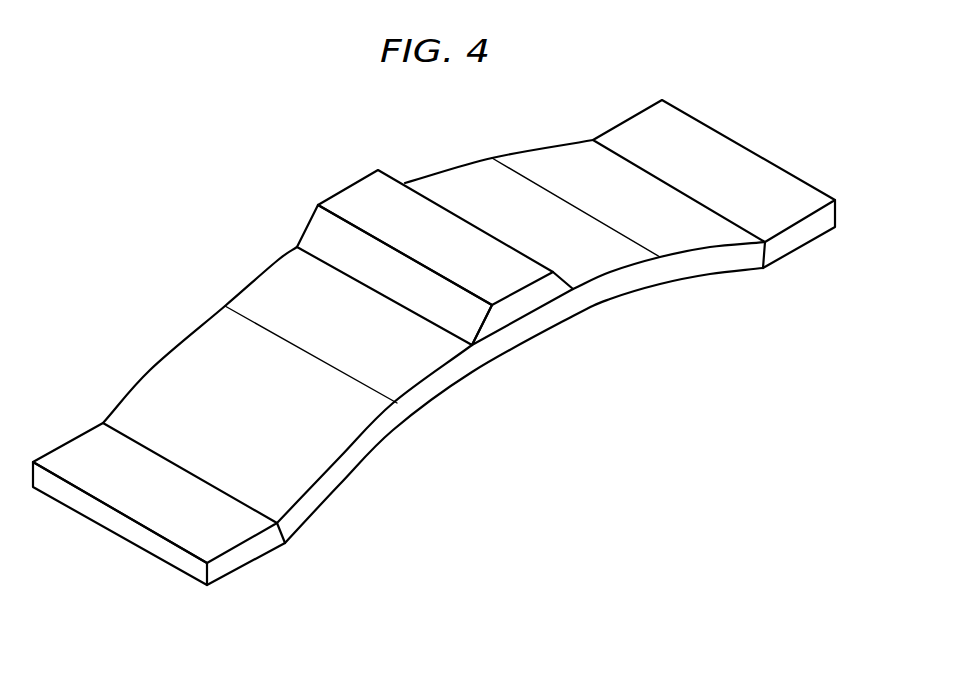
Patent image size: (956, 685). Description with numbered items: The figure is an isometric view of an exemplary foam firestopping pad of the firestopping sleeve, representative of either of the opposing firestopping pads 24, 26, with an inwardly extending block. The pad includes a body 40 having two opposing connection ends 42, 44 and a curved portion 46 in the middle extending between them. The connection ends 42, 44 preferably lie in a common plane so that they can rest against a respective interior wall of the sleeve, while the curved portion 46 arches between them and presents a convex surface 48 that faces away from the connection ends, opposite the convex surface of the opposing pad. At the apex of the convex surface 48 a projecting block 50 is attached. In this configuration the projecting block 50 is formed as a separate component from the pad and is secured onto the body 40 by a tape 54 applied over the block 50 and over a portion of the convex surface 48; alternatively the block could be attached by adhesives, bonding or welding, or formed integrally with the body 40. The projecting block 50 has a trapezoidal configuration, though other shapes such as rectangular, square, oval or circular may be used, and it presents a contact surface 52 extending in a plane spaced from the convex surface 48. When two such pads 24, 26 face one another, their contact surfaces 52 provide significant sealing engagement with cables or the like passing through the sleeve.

The firestopping pad 24 is at (204, 196).
The firestopping pad 26 is at (441, 357).
The body 40 is at (362, 489).
The connection end 42 is at (238, 557).
The connection end 44 is at (802, 233).
The curved portion 46 is at (450, 375).
The convex surface 48 is at (185, 355).
The projecting block 50 is at (528, 298).
The contact surface 52 is at (360, 195).
The tape 54 is at (460, 173).